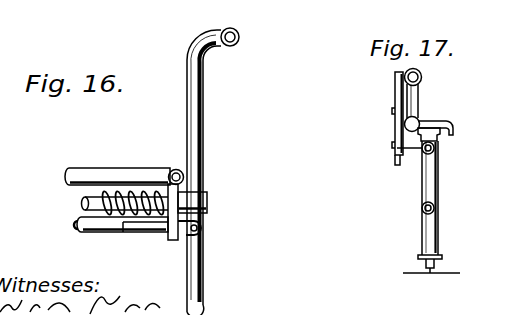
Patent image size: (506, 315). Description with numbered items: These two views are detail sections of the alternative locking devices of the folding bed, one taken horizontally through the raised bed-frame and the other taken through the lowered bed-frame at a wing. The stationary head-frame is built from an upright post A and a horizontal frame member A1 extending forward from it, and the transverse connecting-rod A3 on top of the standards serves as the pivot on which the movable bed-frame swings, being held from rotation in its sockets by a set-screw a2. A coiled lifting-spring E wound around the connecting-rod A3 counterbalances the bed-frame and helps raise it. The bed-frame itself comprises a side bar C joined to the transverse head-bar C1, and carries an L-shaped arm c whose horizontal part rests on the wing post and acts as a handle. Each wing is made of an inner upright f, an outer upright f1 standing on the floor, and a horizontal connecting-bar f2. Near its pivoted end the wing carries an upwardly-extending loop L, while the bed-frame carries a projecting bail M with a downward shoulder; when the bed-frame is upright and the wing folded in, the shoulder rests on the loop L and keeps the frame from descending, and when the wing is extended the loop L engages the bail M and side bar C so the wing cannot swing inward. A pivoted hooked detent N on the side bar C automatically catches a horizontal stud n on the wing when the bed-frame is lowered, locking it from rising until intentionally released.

In FIG. 16, the upright post A is at (240, 37).
In FIG. 16, the horizontal frame member A1 is at (205, 136).
In FIG. 16, the transverse connecting-rod A3 is at (81, 203).
In FIG. 16, the transverse head-bar C1 is at (94, 172).
In FIG. 16, the side bar C is at (171, 170).
In FIG. 17, the side bar C is at (422, 77).
In FIG. 17, the L-shaped arm c is at (420, 101).
In FIG. 16, the set-screw a2 is at (209, 198).
In FIG. 16, the inner upright f is at (201, 231).
In FIG. 17, the outer upright or post f1 is at (440, 178).
In FIG. 16, the horizontal connecting-bar f2 is at (77, 232).
In FIG. 17, the horizontal connecting-bar f2 is at (434, 147).
In FIG. 16, the lifting-spring E is at (108, 215).
In FIG. 16, the loop L is at (147, 232).
In FIG. 16, the loop or bail M is at (175, 240).
In FIG. 17, the hooked detent N is at (394, 124).
In FIG. 17, the horizontal stud n is at (410, 153).